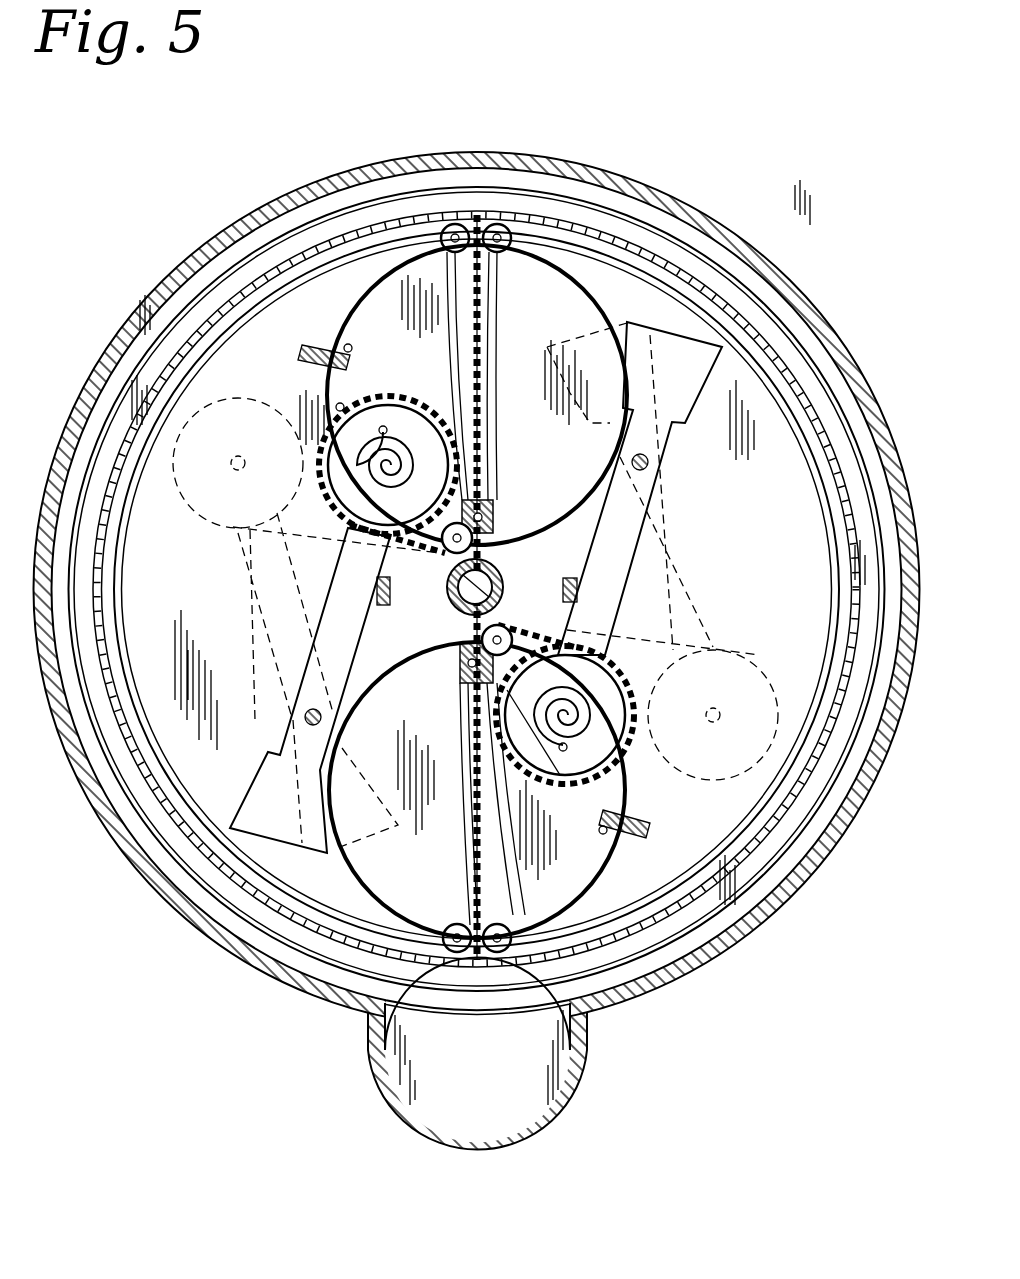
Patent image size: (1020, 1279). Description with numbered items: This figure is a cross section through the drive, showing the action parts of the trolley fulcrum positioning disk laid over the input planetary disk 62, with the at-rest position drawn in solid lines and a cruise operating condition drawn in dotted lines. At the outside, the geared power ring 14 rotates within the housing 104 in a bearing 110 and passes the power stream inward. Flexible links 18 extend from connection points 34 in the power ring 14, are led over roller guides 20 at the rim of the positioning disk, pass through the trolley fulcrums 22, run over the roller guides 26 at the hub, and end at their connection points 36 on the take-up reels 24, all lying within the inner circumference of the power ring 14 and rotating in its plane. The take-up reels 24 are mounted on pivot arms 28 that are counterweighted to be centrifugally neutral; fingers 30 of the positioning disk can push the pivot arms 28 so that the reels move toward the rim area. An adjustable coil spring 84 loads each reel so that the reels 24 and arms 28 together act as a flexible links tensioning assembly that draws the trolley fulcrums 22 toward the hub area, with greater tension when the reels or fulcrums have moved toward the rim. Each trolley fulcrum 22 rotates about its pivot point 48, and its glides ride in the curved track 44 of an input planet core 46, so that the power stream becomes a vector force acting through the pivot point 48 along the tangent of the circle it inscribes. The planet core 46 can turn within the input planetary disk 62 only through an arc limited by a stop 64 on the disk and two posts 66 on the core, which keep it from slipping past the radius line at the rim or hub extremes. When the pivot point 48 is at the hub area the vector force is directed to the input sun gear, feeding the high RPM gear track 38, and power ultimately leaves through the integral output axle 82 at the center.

The geared power ring 14 is at (293, 933).
The flexible links 18 is at (473, 880).
The roller guides 20 is at (452, 228).
The trolley fulcrums 22 is at (458, 687).
The take-up reels 24 is at (605, 745).
The roller guides 26 is at (472, 548).
The pivot arms 28 is at (660, 425).
The fingers 30 is at (570, 578).
The connection points 34 is at (484, 226).
The connection points 36 is at (571, 773).
The high RPM gear track 38 is at (500, 592).
The track 44 is at (500, 898).
The planet core 46 is at (506, 330).
The pivot point 48 is at (460, 655).
The input planetary disk 62 is at (231, 690).
The stop 64 is at (300, 357).
The posts 66 is at (352, 350).
The output axle 82 is at (475, 601).
The adjustable coil spring 84 is at (383, 452).
The housing 104 is at (590, 1076).
The bearing 110 is at (233, 883).